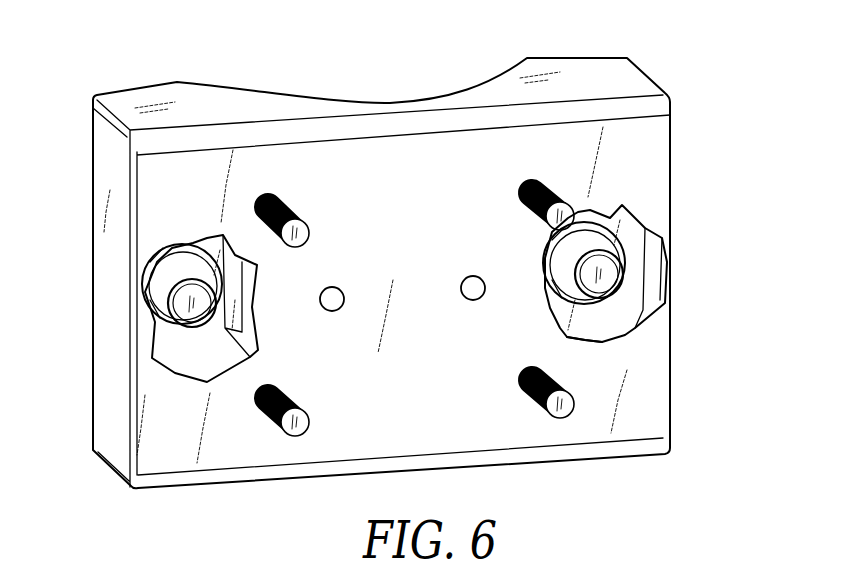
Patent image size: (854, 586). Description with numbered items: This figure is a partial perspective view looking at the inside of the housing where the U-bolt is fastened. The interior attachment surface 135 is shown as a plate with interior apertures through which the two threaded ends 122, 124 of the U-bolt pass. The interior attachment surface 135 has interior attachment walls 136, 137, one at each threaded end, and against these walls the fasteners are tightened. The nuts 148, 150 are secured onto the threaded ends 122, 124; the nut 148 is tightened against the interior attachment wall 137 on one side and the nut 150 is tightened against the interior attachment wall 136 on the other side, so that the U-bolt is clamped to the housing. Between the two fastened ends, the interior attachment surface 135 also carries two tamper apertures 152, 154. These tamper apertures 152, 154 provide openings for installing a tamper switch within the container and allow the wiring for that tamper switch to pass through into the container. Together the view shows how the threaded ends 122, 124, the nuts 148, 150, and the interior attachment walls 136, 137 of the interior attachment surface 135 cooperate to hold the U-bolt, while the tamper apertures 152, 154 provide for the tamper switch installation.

The threaded end 122 is at (610, 276).
The threaded end 124 is at (183, 297).
The interior attachment surface 135 is at (587, 328).
The interior attachment wall 136 is at (615, 330).
The interior attachment wall 137 is at (187, 352).
The nut 148 is at (150, 307).
The nut 150 is at (626, 275).
The tamper aperture 152 is at (334, 297).
The tamper aperture 154 is at (477, 277).